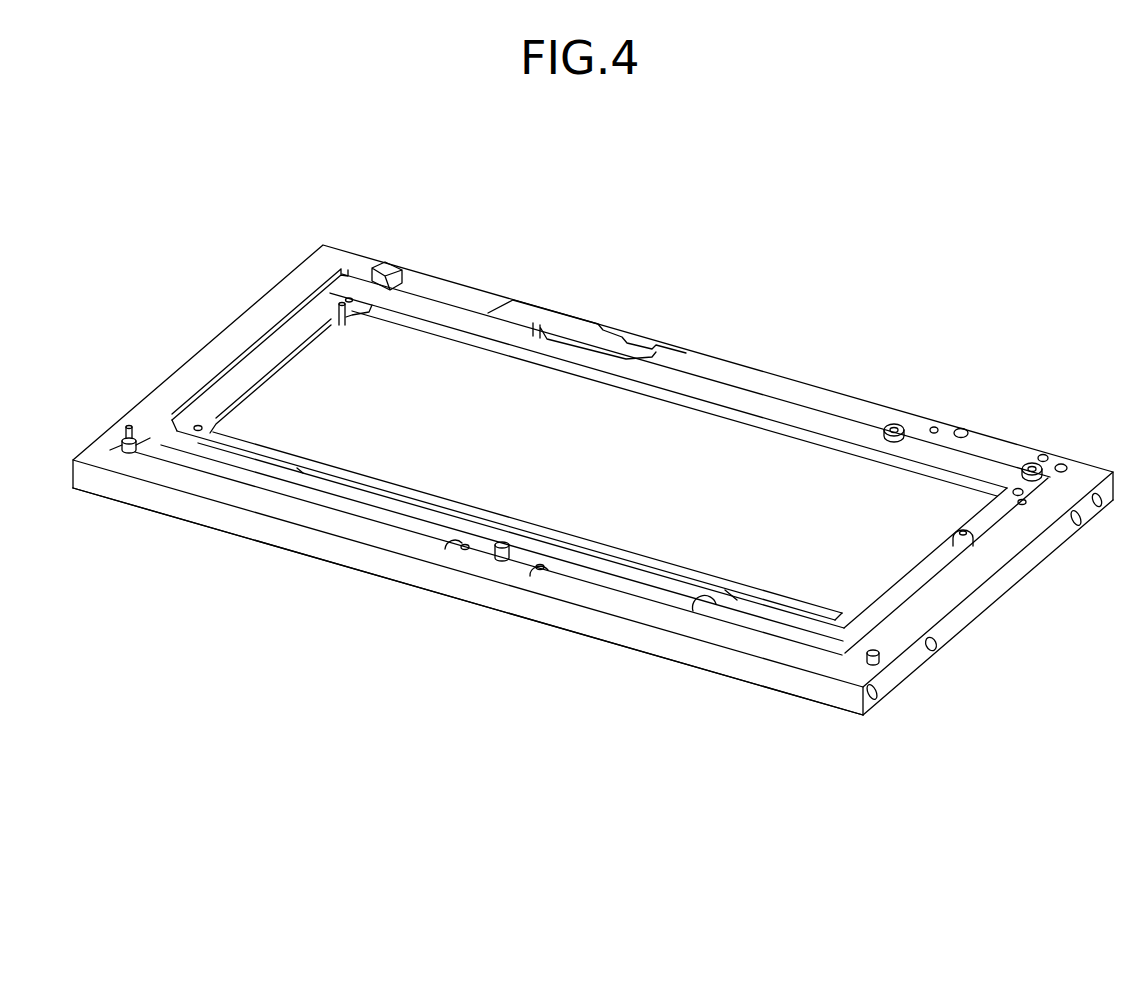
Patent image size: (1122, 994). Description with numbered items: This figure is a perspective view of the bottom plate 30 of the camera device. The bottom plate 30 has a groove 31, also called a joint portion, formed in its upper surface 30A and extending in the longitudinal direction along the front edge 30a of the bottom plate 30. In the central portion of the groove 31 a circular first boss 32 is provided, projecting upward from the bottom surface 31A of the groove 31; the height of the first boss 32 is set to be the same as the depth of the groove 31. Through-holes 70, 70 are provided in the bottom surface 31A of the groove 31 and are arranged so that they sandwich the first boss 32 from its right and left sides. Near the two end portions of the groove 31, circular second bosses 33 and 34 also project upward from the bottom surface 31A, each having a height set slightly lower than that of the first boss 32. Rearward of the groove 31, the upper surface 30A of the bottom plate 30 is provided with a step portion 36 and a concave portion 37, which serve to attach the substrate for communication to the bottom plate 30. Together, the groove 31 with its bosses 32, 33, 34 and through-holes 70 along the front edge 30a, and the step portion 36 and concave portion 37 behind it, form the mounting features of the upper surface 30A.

The bottom plate 30 is at (1033, 575).
The upper surface 30A is at (947, 598).
The front edge 30a is at (805, 673).
The groove 31 is at (670, 608).
The bottom surface 31A is at (693, 600).
The first boss 32 is at (502, 555).
The second boss 33 is at (132, 453).
The second boss 34 is at (877, 662).
The step portion 36 is at (836, 430).
The concave portion 37 is at (725, 455).
The through-hole 70 is at (450, 538).